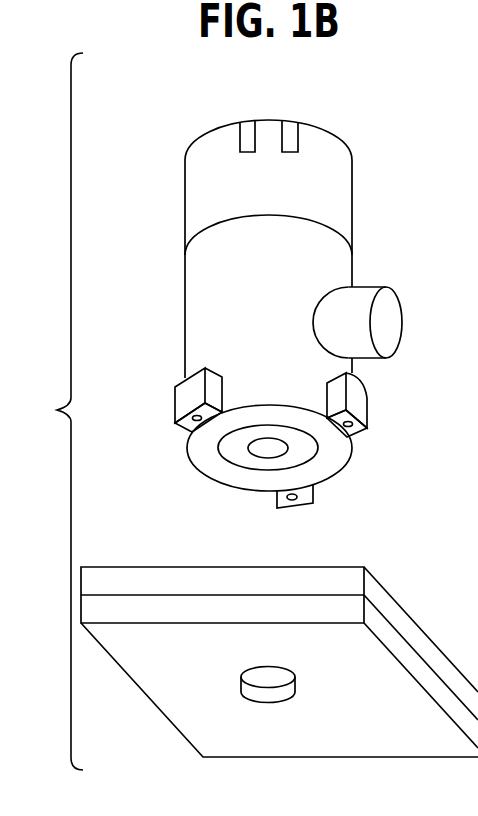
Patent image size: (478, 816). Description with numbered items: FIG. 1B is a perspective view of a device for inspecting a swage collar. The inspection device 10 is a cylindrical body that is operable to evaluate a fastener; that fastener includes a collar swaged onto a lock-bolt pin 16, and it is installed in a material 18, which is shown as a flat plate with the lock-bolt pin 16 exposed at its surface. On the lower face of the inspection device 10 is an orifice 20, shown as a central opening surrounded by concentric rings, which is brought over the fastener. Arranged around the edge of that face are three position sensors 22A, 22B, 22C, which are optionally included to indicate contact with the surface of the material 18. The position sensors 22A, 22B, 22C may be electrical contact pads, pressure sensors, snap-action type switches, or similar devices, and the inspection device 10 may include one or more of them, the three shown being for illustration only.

The inspection device 10 is at (217, 129).
The orifice 20 is at (265, 452).
The position sensor 22A is at (192, 427).
The position sensor 22B is at (303, 505).
The position sensor 22C is at (368, 424).
The lock-bolt pin 16 is at (248, 678).
The material 18 is at (233, 732).